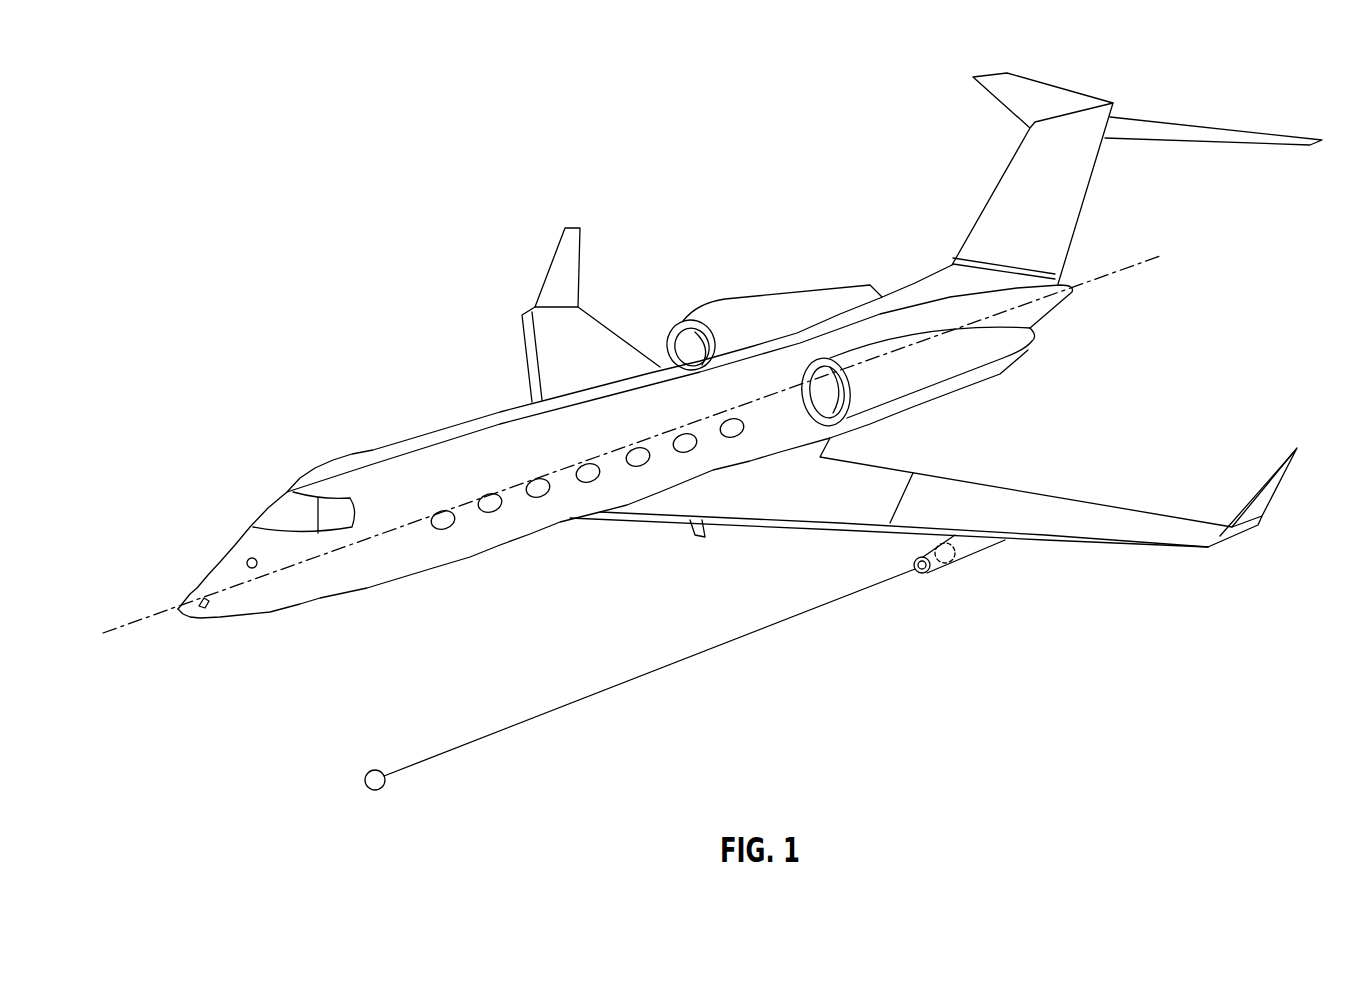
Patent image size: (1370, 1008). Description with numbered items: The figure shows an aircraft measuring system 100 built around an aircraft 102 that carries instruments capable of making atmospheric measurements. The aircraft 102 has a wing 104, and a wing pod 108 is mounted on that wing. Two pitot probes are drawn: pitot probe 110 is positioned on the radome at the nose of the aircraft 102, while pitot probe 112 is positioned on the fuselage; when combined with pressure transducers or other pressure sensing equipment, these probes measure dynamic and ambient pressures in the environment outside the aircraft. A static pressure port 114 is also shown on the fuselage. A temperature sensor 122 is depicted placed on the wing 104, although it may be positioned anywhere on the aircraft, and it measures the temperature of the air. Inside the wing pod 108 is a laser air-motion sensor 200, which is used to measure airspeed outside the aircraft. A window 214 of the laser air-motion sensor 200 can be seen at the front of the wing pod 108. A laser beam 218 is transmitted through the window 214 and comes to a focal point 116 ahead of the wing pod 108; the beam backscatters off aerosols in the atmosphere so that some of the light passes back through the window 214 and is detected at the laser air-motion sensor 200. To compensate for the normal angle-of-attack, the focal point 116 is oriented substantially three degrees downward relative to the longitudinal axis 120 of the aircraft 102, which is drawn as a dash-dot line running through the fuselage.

The aircraft measuring system 100 is at (290, 163).
The aircraft 102 is at (416, 432).
The wing 104 is at (1052, 497).
The wing pod 108 is at (985, 548).
The pitot probe 110 is at (206, 608).
The pitot probe 112 is at (247, 558).
The static pressure port 114 is at (447, 529).
The focal point 116 is at (378, 770).
The longitudinal axis 120 is at (143, 617).
The temperature sensor 122 is at (688, 530).
The laser air-motion sensor 200 is at (950, 572).
The window 214 is at (927, 575).
The laser beam 218 is at (681, 676).